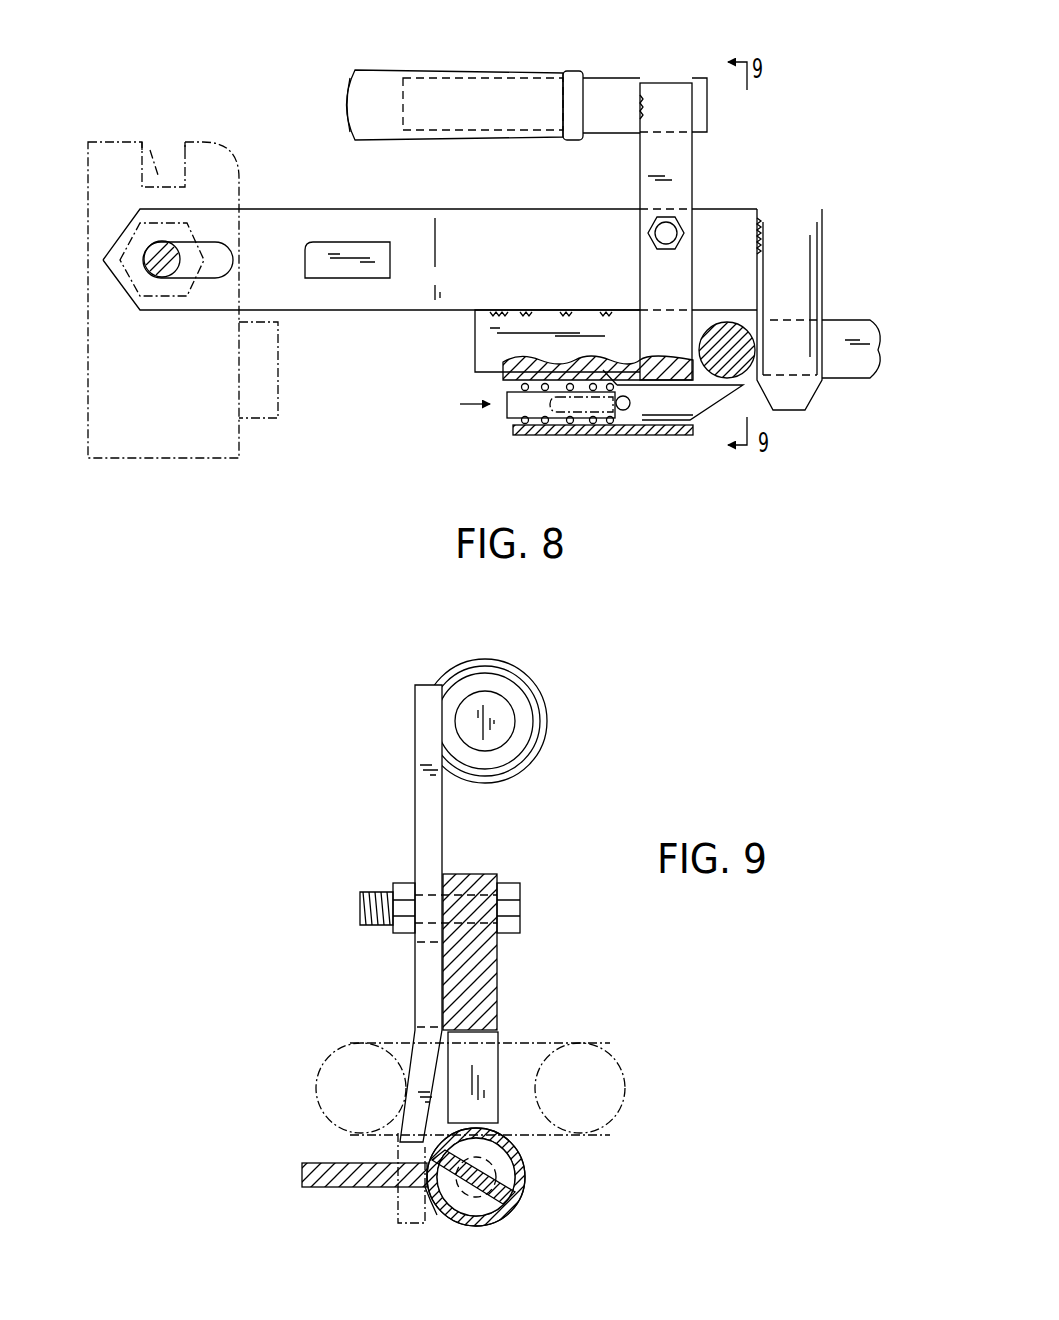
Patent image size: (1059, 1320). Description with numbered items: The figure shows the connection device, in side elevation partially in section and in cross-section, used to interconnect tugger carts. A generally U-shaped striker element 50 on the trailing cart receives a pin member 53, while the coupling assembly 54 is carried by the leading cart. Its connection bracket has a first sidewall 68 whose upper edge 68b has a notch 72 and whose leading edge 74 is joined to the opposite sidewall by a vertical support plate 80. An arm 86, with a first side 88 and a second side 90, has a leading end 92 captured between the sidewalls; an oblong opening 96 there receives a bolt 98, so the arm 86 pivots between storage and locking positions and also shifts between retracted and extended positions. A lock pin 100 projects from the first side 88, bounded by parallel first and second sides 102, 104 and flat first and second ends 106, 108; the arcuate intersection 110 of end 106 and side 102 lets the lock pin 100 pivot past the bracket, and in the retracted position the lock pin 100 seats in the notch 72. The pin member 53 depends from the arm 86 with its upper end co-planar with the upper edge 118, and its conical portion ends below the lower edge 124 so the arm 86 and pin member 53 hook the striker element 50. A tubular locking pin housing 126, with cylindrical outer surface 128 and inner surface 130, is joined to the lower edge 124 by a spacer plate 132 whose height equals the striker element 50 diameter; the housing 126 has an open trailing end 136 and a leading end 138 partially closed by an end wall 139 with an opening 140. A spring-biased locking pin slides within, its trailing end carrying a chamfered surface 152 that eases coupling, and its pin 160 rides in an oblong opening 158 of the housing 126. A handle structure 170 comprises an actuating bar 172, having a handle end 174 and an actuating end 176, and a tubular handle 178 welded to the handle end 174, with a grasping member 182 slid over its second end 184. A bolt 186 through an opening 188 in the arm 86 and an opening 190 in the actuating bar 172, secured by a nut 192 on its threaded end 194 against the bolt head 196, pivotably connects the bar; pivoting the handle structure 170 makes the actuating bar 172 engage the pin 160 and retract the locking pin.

In FIG. 8, the U-shaped striker element 50 is at (843, 384).
In FIG. 9, the U-shaped striker element 50 is at (632, 1060).
In FIG. 8, the pin member 53 is at (826, 242).
In FIG. 8, the coupling assembly 54 is at (375, 357).
In FIG. 8, the first sidewall 68 is at (86, 388).
In FIG. 8, the upper edge 68b is at (130, 140).
In FIG. 8, the notch 72 is at (152, 158).
In FIG. 9, the leading edge 74 is at (411, 688).
In FIG. 8, the support plate 80 is at (690, 80).
In FIG. 8, the arm 86 is at (278, 206).
In FIG. 9, the arm 86 is at (488, 872).
In FIG. 8, the first side 88 is at (553, 261).
In FIG. 9, the first side 88 is at (440, 980).
In FIG. 9, the second side 90 is at (500, 985).
In FIG. 8, the leading end 92 is at (124, 228).
In FIG. 8, the oblong opening 96 is at (215, 279).
In FIG. 8, the bolt 98 is at (160, 272).
In FIG. 8, the lock pin 100 is at (365, 270).
In FIG. 8, the first side 102 is at (385, 236).
In FIG. 8, the second side 104 is at (340, 279).
In FIG. 8, the first end 106 is at (305, 268).
In FIG. 8, the second end 108 is at (390, 257).
In FIG. 8, the intersection 110 is at (318, 255).
In FIG. 8, the upper edge 118 is at (445, 210).
In FIG. 8, the lower edge 124 is at (333, 312).
In FIG. 8, the locking pin housing 126 is at (567, 444).
In FIG. 9, the locking pin housing 126 is at (496, 1226).
In FIG. 8, the outer surface 128 is at (597, 437).
In FIG. 9, the outer surface 128 is at (520, 1195).
In FIG. 8, the inner surface 130 is at (665, 418).
In FIG. 9, the inner surface 130 is at (515, 1176).
In FIG. 8, the spacer plate 132 is at (476, 345).
In FIG. 8, the trailing end 136 is at (702, 424).
In FIG. 8, the leading end 138 is at (512, 420).
In FIG. 8, the end wall 139 is at (510, 383).
In FIG. 8, the opening 140 is at (505, 408).
In FIG. 8, the chamfered surface 152 is at (720, 398).
In FIG. 9, the oblong opening 158 is at (422, 1196).
In FIG. 8, the pin 160 is at (628, 412).
In FIG. 9, the pin 160 is at (300, 1175).
In FIG. 8, the handle structure 170 is at (650, 78).
In FIG. 8, the actuating bar 172 is at (692, 190).
In FIG. 9, the actuating bar 172 is at (415, 840).
In FIG. 8, the handle end 174 is at (668, 80).
In FIG. 9, the actuating end 176 is at (397, 1213).
In FIG. 8, the tubular handle 178 is at (614, 140).
In FIG. 9, the tubular handle 178 is at (482, 672).
In FIG. 8, the grasping member 182 is at (370, 72).
In FIG. 8, the second end 184 is at (428, 74).
In FIG. 9, the bolt 186 is at (362, 928).
In FIG. 9, the opening 188 is at (507, 943).
In FIG. 9, the opening 190 is at (418, 882).
In FIG. 9, the nut 192 is at (395, 890).
In FIG. 9, the threaded end 194 is at (358, 908).
In FIG. 9, the bolt head 196 is at (520, 895).